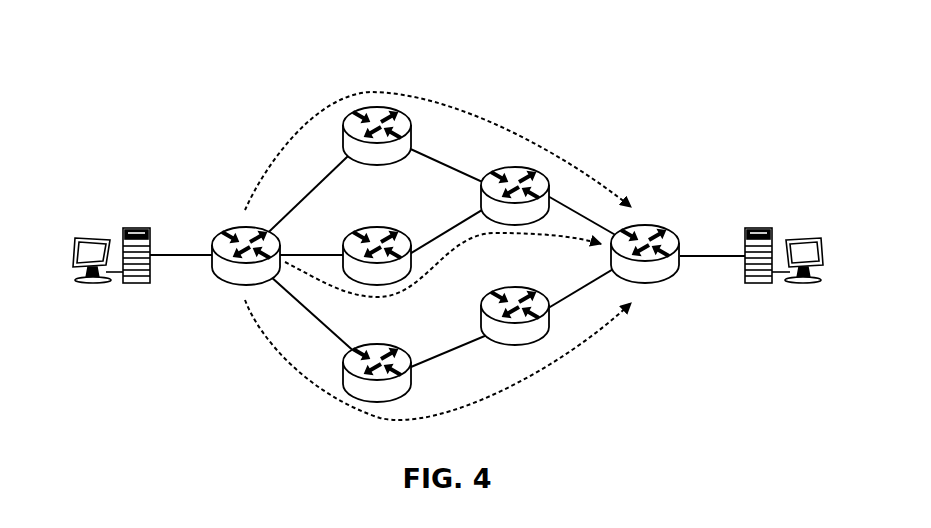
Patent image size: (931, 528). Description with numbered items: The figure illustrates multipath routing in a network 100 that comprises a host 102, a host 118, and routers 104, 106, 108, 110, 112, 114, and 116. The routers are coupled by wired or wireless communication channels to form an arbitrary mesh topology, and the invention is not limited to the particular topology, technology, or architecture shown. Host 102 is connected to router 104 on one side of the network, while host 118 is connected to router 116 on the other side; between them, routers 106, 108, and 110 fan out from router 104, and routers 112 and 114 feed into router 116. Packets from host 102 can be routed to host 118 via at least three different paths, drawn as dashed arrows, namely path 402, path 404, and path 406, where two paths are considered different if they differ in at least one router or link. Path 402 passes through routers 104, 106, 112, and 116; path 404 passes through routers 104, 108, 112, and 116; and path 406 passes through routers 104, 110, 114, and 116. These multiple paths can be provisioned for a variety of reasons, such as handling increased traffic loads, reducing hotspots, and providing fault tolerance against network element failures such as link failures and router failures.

The network 100 is at (194, 61).
The host 102 is at (111, 268).
The router 104 is at (246, 256).
The router 106 is at (377, 136).
The router 108 is at (377, 256).
The router 110 is at (377, 373).
The router 112 is at (515, 196).
The router 114 is at (515, 316).
The router 116 is at (645, 254).
The host 118 is at (784, 270).
The path 402 is at (438, 151).
The path 404 is at (443, 265).
The path 406 is at (438, 362).